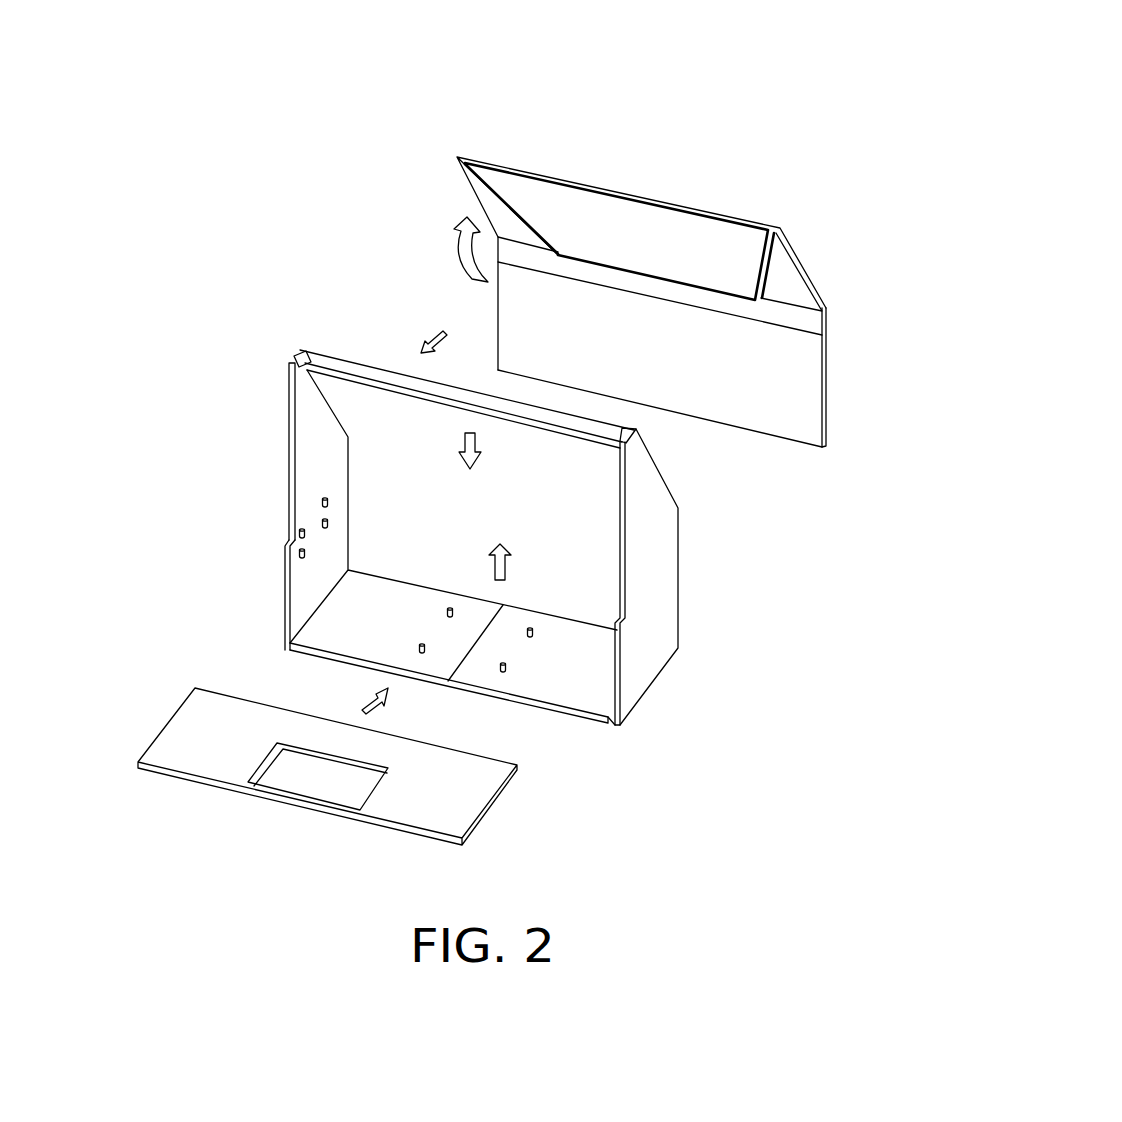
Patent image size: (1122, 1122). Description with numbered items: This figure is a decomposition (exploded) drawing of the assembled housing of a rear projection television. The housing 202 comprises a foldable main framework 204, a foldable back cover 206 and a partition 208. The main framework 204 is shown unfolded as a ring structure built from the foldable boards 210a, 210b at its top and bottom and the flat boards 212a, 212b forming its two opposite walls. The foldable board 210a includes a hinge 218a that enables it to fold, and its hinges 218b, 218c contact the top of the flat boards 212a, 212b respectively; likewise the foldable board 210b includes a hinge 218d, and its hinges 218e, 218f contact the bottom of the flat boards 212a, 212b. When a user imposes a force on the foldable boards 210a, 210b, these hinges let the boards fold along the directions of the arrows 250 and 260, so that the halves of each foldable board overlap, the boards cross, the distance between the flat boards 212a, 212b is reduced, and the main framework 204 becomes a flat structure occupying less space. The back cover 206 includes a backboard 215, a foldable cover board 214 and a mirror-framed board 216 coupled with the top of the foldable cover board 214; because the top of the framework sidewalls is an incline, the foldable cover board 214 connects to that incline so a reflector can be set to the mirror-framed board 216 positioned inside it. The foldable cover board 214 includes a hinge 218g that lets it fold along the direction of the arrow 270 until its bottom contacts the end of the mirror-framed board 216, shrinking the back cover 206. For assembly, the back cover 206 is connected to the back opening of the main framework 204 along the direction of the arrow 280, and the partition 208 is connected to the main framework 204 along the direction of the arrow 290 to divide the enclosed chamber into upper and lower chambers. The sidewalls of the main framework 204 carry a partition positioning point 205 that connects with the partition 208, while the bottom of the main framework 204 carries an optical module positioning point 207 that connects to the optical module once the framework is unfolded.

The housing 202 is at (864, 55).
The foldable main framework 204 is at (461, 549).
The partition positioning point 205 is at (298, 534).
The foldable back cover 206 is at (641, 205).
The optical module positioning point 207 is at (422, 655).
The partition 208 is at (165, 725).
The foldable board 210a is at (465, 397).
The foldable board 210b is at (458, 729).
The flat board 212a is at (655, 615).
The flat board 212b is at (313, 518).
The foldable cover board 214 is at (697, 335).
The backboard 215 is at (812, 388).
The mirror-framed board 216 is at (675, 237).
The hinge 218a is at (467, 345).
The hinge 218b is at (636, 431).
The hinge 218c is at (294, 356).
The hinge 218d is at (488, 632).
The hinge 218e is at (607, 722).
The hinge 218f is at (231, 577).
The hinge 218g is at (780, 327).
The arrow 250 is at (477, 447).
The arrow 260 is at (500, 565).
The arrow 270 is at (453, 235).
The arrow 280 is at (432, 334).
The arrow 290 is at (360, 697).